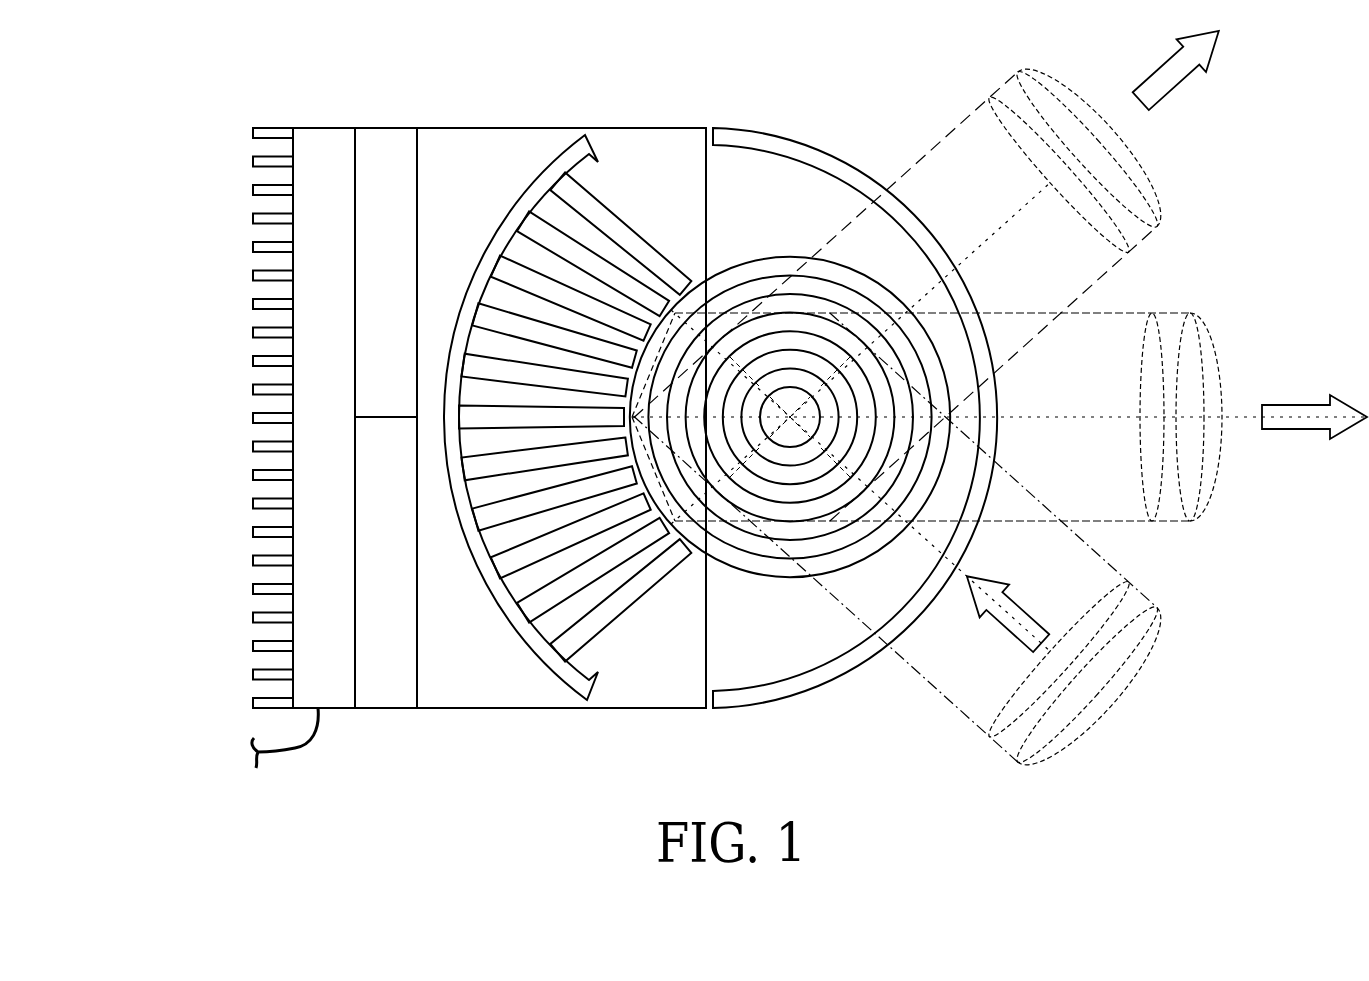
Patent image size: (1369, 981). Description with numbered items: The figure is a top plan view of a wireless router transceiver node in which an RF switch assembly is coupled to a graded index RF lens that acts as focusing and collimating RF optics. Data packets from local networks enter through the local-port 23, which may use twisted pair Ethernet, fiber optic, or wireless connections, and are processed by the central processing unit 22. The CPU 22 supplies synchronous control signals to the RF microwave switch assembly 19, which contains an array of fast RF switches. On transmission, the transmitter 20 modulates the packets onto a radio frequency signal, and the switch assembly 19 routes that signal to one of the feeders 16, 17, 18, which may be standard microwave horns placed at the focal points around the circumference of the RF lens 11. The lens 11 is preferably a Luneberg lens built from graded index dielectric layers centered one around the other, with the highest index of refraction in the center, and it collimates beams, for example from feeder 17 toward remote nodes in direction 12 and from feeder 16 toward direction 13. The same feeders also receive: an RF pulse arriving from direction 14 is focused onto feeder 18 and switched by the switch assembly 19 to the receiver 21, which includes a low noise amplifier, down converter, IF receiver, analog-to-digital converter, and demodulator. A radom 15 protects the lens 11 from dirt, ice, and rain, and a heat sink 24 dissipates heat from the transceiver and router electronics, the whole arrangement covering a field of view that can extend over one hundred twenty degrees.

The RF lens 11 is at (779, 226).
The direction 12 is at (1202, 347).
The direction 13 is at (1046, 82).
The direction 14 is at (1098, 700).
The radom 15 is at (829, 686).
The feeder 16 is at (570, 598).
The feeder 17 is at (482, 410).
The feeder 18 is at (545, 215).
The RF microwave switch assembly 19 is at (480, 689).
The transmitter 20 is at (398, 232).
The receiver 21 is at (398, 616).
The central processing unit 22 is at (337, 474).
The local-port 23 is at (305, 757).
The heat sink 24 is at (256, 188).